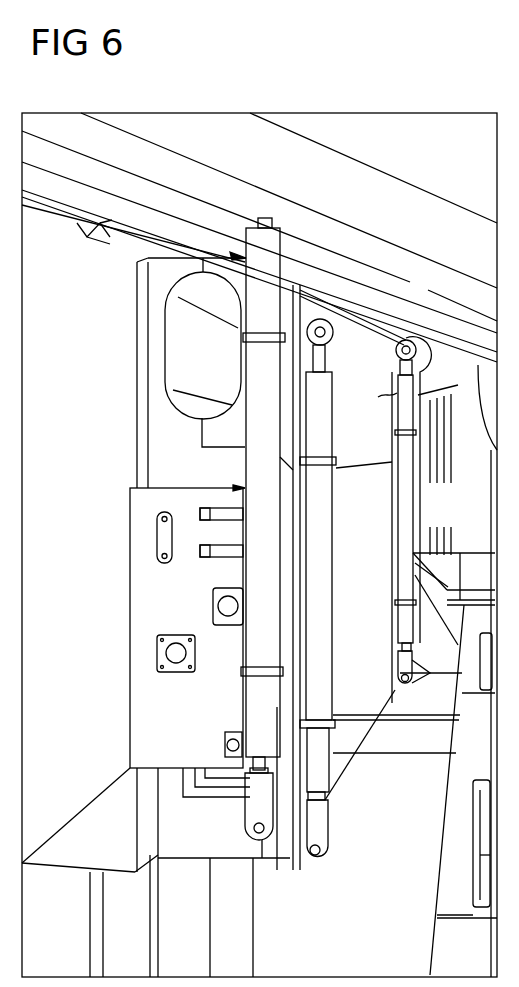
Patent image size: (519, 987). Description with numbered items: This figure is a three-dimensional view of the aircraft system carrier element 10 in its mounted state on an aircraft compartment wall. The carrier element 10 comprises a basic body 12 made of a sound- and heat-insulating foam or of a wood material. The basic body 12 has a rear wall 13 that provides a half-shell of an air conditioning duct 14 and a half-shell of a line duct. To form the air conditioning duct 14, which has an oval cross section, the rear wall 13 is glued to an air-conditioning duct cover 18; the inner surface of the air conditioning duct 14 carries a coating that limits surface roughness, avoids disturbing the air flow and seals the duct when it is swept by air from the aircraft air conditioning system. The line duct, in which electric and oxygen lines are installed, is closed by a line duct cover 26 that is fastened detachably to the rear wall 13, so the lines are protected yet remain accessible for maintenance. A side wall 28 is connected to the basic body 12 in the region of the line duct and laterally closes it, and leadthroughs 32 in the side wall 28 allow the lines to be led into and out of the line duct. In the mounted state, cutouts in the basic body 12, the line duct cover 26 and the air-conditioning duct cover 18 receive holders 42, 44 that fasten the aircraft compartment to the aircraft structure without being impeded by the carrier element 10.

The aircraft system carrier element 10 is at (382, 330).
The basic body 12 is at (380, 514).
The rear wall 13 is at (140, 268).
The air conditioning duct 14 is at (190, 355).
The air-conditioning duct cover 18 is at (417, 378).
The line duct cover 26 is at (372, 690).
The side wall 28 is at (150, 700).
The leadthroughs 32 is at (157, 653).
The holder 42 is at (320, 762).
The holder 44 is at (397, 567).